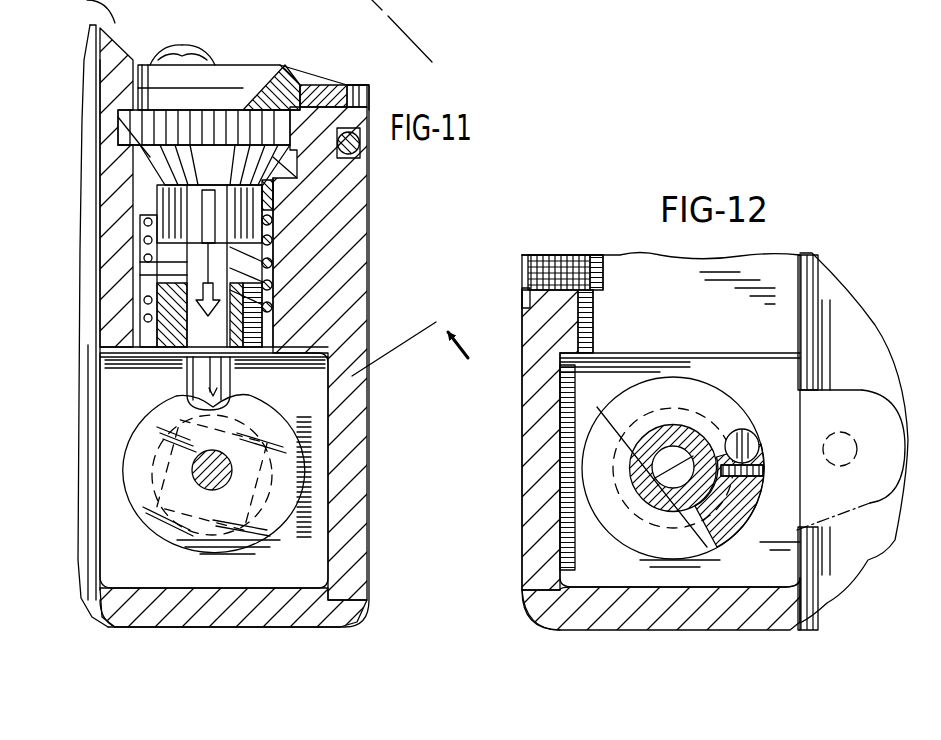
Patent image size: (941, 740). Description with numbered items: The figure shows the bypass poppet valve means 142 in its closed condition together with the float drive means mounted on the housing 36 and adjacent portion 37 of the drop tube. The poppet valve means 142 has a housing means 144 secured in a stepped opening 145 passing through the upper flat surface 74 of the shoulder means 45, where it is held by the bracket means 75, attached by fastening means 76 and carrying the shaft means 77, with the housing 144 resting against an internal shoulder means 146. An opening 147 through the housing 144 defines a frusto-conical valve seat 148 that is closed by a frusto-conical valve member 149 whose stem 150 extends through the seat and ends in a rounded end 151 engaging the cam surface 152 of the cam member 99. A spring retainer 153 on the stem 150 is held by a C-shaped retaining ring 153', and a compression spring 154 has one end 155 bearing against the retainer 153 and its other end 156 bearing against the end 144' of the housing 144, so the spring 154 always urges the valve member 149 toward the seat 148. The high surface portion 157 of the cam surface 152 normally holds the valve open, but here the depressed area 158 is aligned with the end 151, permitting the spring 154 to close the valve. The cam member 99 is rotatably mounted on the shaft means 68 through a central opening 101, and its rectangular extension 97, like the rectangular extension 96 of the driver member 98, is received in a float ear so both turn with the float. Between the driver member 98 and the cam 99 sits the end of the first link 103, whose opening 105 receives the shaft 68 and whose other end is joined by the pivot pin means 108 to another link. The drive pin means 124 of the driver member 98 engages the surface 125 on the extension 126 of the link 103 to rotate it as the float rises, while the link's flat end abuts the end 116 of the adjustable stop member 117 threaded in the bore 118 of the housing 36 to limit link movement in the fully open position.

In FIG. 11, the housing 36 is at (366, 543).
In FIG. 12, the housing 36 is at (522, 445).
In FIG. 11, the portion of tubular member 37 is at (367, 88).
In FIG. 12, the portion of tubular member 37 is at (527, 270).
In FIG. 11, the shoulder means 45 is at (323, 628).
In FIG. 12, the shoulder means 45 is at (560, 632).
In FIG. 11, the shaft means 68 is at (217, 476).
In FIG. 12, the shaft means 68 is at (677, 412).
In FIG. 11, the upper flat surface 74 is at (352, 87).
In FIG. 11, the bracket means 75 is at (333, 92).
In FIG. 11, the fastening means 76 is at (167, 55).
In FIG. 11, the shaft means 77 is at (88, 11).
In FIG. 12, the rectangular extension 96 is at (634, 402).
In FIG. 11, the rectangular extension 97 is at (287, 545).
In FIG. 12, the driver member 98 is at (706, 380).
In FIG. 11, the cam member 99 is at (314, 447).
In FIG. 11, the opening 101 is at (160, 550).
In FIG. 12, the first link 103 is at (765, 392).
In FIG. 12, the opening 105 is at (680, 447).
In FIG. 12, the pivot pin means 108 is at (856, 430).
In FIG. 12, the end of adjustable stop member 116 is at (598, 268).
In FIG. 12, the adjustable stop member 117 is at (558, 262).
In FIG. 12, the threaded bore 118 is at (527, 312).
In FIG. 12, the drive pin means 124 is at (738, 420).
In FIG. 12, the surface 125 is at (753, 443).
In FIG. 12, the extension 126 is at (765, 498).
In FIG. 11, the poppet valve means 142 is at (222, 128).
In FIG. 11, the housing means 144 is at (376, 154).
In FIG. 11, the end of housing means 144' is at (341, 262).
In FIG. 11, the stepped opening 145 is at (268, 250).
In FIG. 11, the internal shoulder means 146 is at (277, 193).
In FIG. 11, the opening 147 is at (262, 92).
In FIG. 11, the valve seat 148 is at (120, 168).
In FIG. 11, the valve member 149 is at (204, 127).
In FIG. 11, the stem 150 is at (258, 272).
In FIG. 11, the rounded end 151 is at (228, 390).
In FIG. 11, the cam surface 152 is at (307, 478).
In FIG. 11, the spring retainer 153 is at (110, 315).
In FIG. 11, the retaining ring 153' is at (214, 369).
In FIG. 11, the compression spring 154 is at (145, 248).
In FIG. 11, the end of compression spring 155 is at (145, 298).
In FIG. 11, the end of compression spring 156 is at (145, 220).
In FIG. 11, the high surface portion 157 is at (140, 518).
In FIG. 11, the depressed area 158 is at (160, 550).